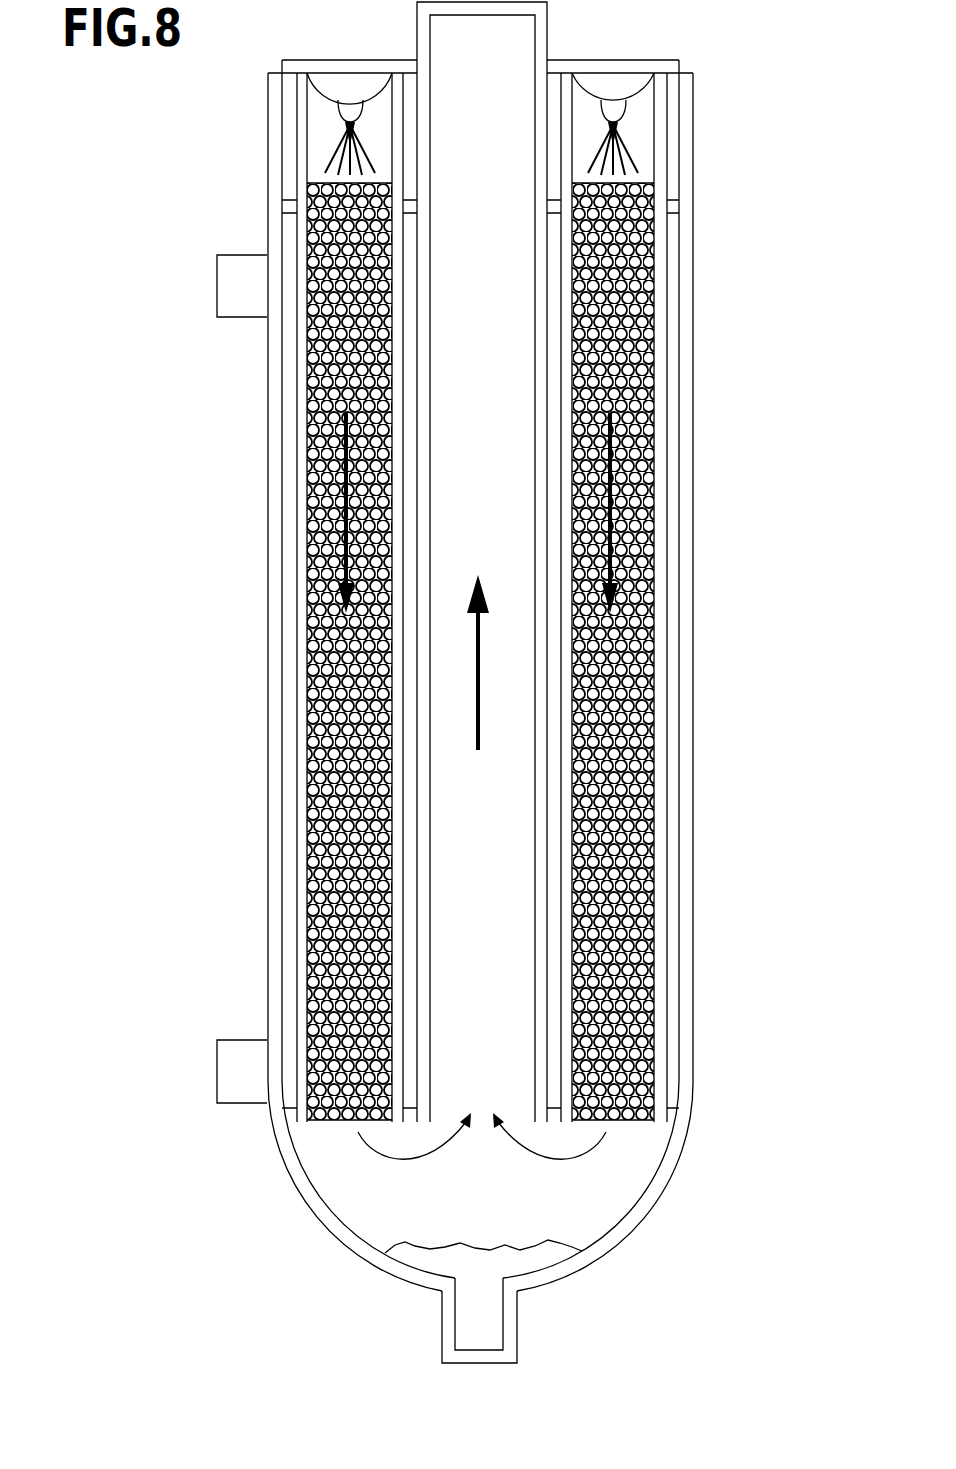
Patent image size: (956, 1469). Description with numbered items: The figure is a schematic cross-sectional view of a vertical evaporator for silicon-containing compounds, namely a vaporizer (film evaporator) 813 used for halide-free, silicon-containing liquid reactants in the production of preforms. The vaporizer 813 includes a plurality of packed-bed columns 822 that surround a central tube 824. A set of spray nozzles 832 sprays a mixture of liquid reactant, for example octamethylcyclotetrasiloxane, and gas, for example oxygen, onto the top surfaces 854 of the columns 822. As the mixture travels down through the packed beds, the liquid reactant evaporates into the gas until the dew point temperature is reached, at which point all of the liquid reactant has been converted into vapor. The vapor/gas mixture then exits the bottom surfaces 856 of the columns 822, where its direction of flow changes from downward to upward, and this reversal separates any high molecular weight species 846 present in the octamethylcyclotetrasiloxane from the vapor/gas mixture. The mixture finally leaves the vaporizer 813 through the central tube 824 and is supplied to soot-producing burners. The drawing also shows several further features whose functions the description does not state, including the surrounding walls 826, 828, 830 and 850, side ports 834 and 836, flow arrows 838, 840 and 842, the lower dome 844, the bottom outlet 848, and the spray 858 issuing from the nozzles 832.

The vaporizer 813 is at (228, 723).
The packed-bed columns 822 is at (335, 680).
The central tube 824 is at (510, 257).
The outer shell 826 is at (691, 831).
The annular passage 828 is at (670, 579).
The inner shell wall 830 is at (287, 768).
The spray nozzles 832 is at (628, 92).
The lower port 834 is at (217, 1070).
The upper port 836 is at (217, 288).
The liquid flow arrow 838 is at (338, 512).
The gas flow arrow 840 is at (478, 752).
The gas flow path arrows 842 is at (545, 1168).
The bottom sump dome 844 is at (360, 1208).
The high molecular weight species 846 is at (525, 1262).
The drain outlet 848 is at (478, 1325).
The packing column wall 850 is at (663, 749).
The top surfaces 854 is at (655, 177).
The bottom surfaces 856 is at (620, 1122).
The liquid spray 858 is at (620, 150).